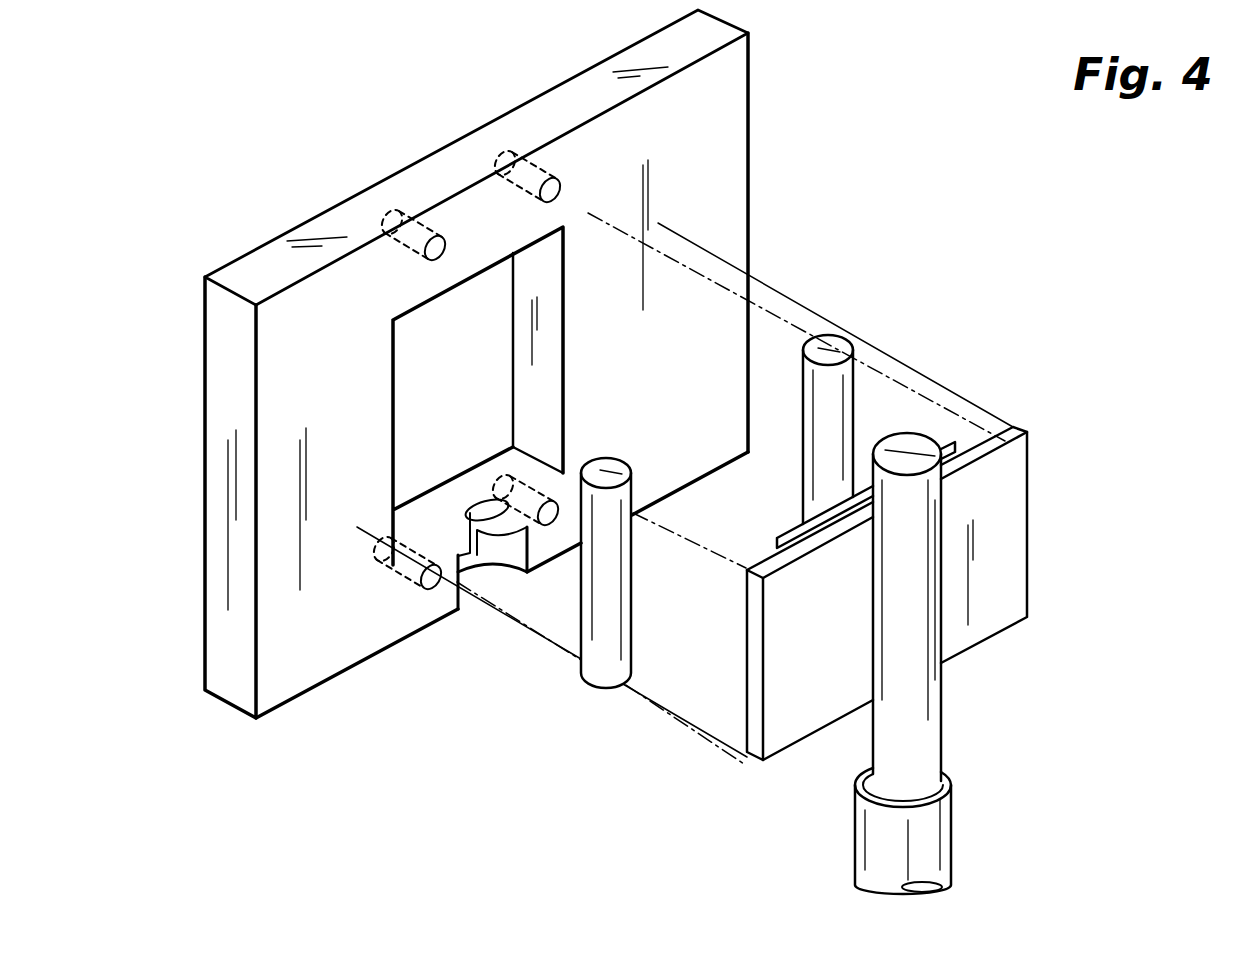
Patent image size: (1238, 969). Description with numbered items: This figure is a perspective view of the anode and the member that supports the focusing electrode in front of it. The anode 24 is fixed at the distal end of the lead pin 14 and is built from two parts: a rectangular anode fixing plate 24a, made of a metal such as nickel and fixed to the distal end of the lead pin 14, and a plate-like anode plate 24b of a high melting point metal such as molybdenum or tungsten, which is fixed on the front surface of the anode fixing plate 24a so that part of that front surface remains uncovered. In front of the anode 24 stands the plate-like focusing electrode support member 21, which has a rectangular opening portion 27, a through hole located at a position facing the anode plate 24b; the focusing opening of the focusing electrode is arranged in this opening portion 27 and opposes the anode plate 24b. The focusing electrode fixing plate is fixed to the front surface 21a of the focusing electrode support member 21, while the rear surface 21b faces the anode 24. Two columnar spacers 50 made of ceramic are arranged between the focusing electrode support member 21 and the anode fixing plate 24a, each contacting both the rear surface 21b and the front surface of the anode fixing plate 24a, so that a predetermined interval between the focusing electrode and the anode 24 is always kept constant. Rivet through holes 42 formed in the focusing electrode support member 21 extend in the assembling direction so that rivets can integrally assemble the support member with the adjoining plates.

The focusing electrode support member 21 is at (538, 360).
The front surface of focusing electrode support member 21a is at (433, 153).
The rear surface of focusing electrode support member 21b is at (720, 215).
The opening portion 27 is at (487, 384).
The rivet through holes 42 is at (412, 225).
The columnar spacers 50 is at (840, 352).
The anode 24 is at (980, 552).
The anode fixing plate 24a is at (1003, 597).
The anode plate 24b is at (960, 448).
The lead pin 14 is at (913, 736).